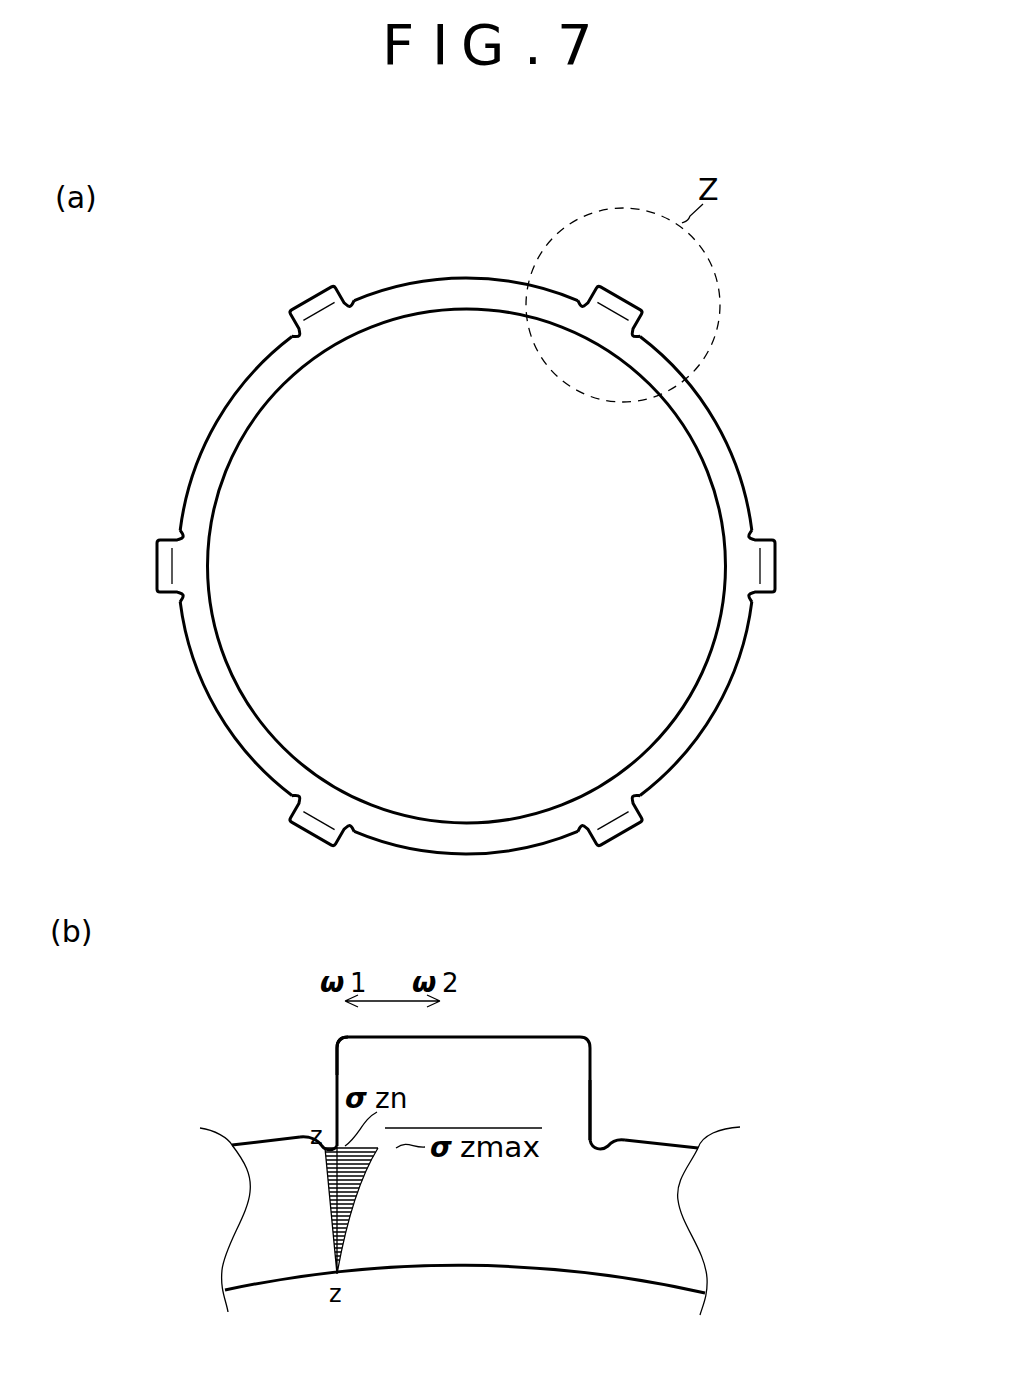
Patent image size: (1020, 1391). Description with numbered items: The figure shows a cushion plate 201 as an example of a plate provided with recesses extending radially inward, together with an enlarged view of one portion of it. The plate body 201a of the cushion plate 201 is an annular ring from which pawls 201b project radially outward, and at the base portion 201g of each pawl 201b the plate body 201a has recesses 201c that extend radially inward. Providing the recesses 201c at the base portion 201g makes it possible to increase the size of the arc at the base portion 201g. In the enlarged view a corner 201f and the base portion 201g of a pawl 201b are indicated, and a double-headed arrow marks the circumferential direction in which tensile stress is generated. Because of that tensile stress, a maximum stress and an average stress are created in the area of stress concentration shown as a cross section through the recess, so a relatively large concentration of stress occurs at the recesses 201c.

The cushion plate 201 is at (460, 243).
The plate body 201a is at (708, 430).
The pawls 201b is at (620, 305).
The recesses 201c is at (584, 305).
The corner portion 201f is at (337, 1062).
The base portion 201g is at (598, 1134).